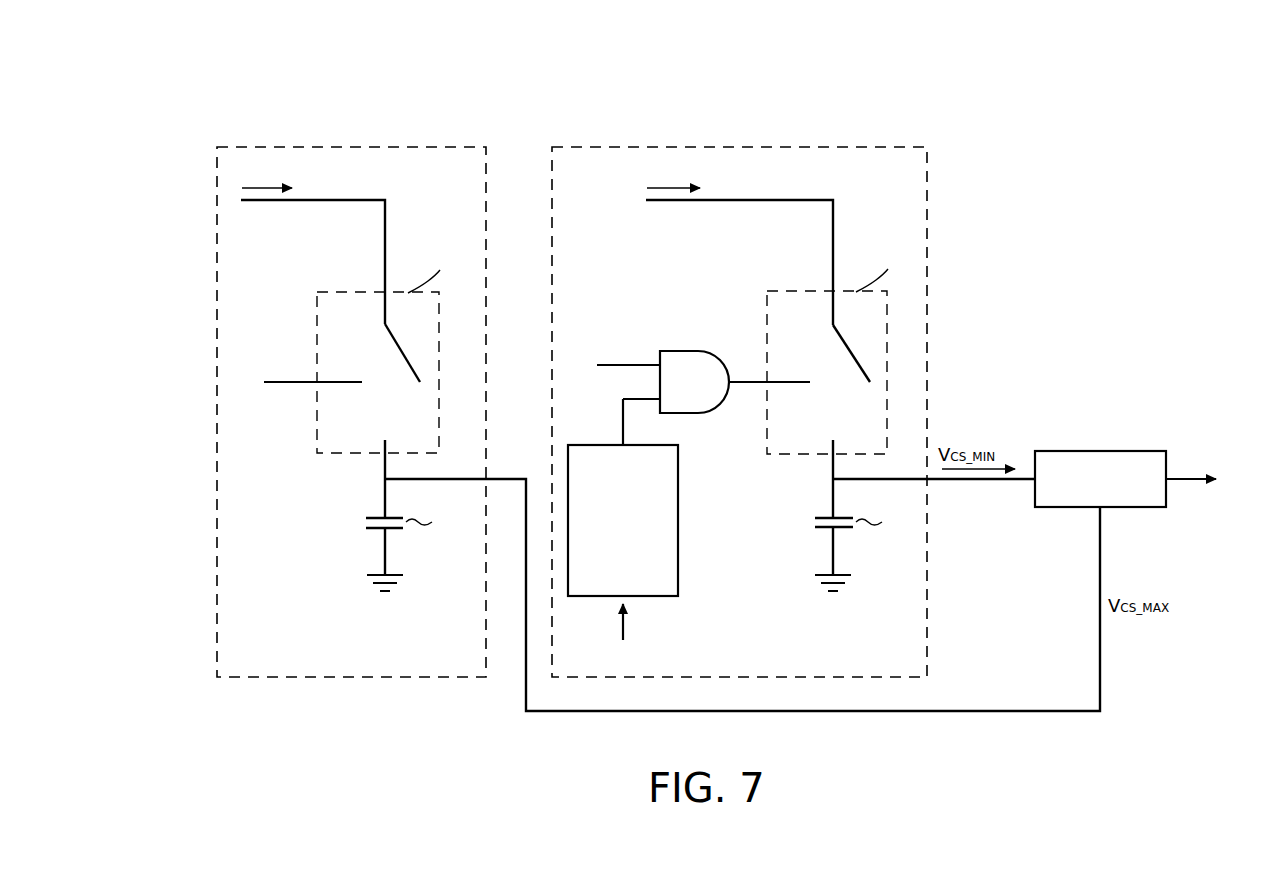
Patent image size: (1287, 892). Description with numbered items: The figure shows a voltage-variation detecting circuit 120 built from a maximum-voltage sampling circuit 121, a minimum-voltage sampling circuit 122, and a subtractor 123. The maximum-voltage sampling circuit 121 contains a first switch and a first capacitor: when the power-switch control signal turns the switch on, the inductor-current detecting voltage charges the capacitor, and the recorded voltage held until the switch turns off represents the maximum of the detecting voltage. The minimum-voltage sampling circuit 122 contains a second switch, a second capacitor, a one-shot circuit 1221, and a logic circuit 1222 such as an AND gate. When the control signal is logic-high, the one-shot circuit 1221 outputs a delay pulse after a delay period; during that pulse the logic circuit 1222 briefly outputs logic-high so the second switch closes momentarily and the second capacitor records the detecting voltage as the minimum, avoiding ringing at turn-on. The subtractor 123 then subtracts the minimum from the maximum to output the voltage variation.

The voltage-variation detecting circuit 120 is at (1108, 108).
The maximum-voltage sampling circuit 121 is at (408, 148).
The minimum-voltage sampling circuit 122 is at (815, 148).
The subtractor 123 is at (1115, 451).
The one-shot circuit 1221 is at (682, 540).
The logic circuit 1222 is at (683, 349).